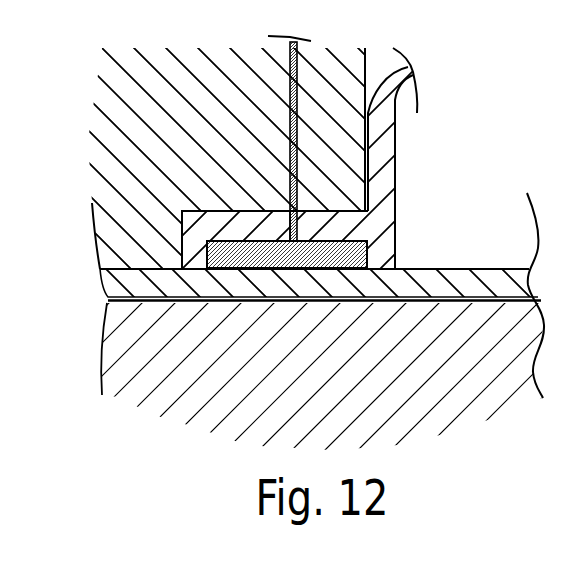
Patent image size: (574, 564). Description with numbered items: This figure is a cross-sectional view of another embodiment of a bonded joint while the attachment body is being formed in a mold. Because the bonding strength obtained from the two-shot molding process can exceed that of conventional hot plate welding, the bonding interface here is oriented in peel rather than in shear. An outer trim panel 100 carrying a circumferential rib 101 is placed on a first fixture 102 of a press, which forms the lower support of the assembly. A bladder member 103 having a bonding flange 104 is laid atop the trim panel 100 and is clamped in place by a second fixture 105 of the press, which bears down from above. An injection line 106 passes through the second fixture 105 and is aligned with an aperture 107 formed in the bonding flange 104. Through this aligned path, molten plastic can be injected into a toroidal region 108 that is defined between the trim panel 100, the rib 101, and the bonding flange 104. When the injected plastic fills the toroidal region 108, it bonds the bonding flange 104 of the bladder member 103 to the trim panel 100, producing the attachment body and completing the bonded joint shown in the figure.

The outer trim panel 100 is at (495, 270).
The circumferential rib 101 is at (376, 269).
The first fixture 102 is at (148, 354).
The bladder member 103 is at (383, 143).
The bonding flange 104 is at (345, 226).
The second fixture 105 is at (110, 102).
The injection line 106 is at (289, 87).
The aperture 107 is at (289, 216).
The toroidal region 108 is at (278, 259).